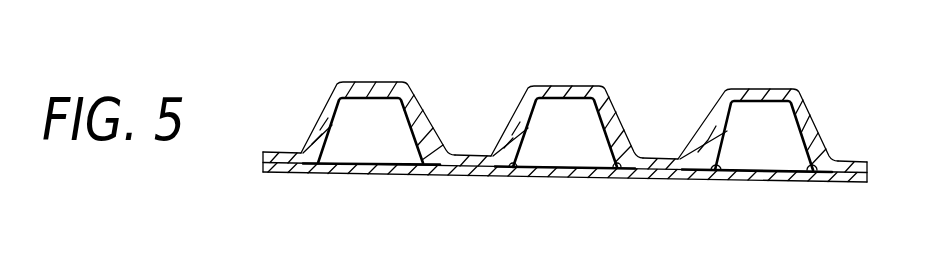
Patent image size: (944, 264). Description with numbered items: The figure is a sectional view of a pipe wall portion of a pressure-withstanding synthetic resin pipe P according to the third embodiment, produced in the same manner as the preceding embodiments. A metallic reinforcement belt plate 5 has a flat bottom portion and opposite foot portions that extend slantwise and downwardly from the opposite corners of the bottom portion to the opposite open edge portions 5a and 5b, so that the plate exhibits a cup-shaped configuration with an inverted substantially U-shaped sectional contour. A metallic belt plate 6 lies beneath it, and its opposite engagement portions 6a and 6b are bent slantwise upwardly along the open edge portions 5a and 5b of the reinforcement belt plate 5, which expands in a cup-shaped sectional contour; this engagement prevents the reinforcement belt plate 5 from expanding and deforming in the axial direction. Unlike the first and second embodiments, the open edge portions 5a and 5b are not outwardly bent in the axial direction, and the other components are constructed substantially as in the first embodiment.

The pressure-withstanding synthetic resin pipe P is at (326, 80).
The metallic reinforcement belt plate 5 is at (656, 138).
The open edge portion 5a is at (716, 182).
The open edge portion 5b is at (812, 182).
The metallic belt plate 6 is at (545, 160).
The engagement portion 6a is at (503, 148).
The engagement portion 6b is at (623, 142).